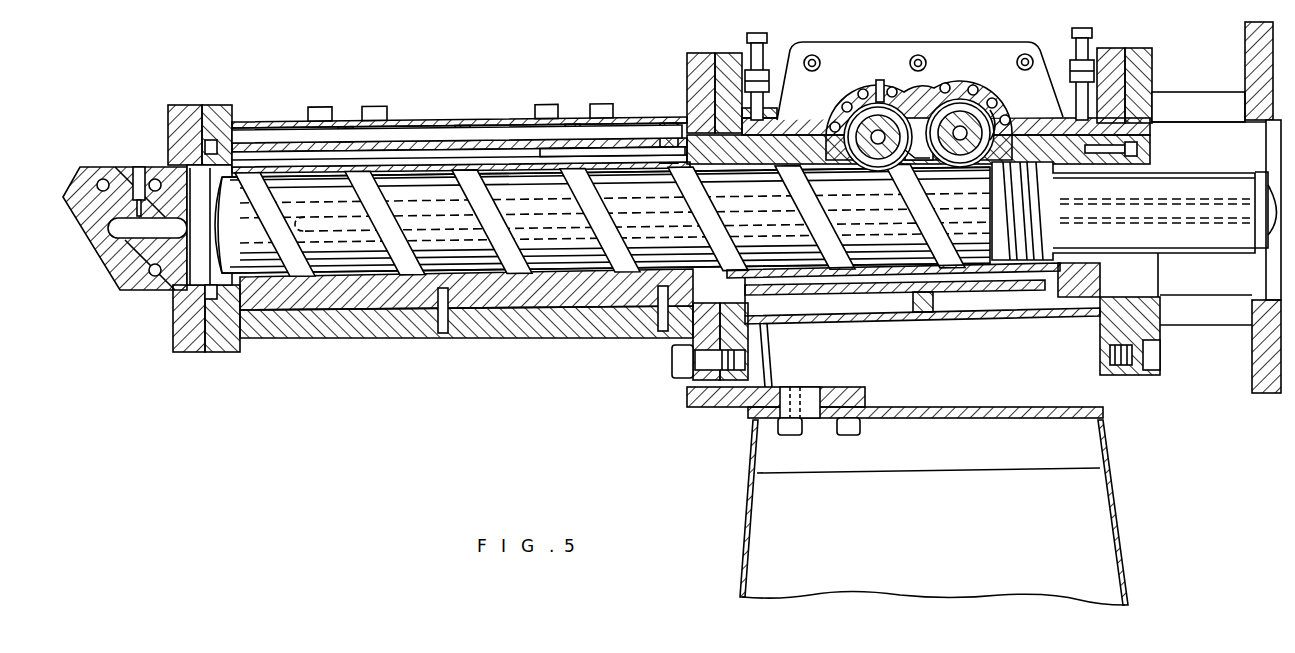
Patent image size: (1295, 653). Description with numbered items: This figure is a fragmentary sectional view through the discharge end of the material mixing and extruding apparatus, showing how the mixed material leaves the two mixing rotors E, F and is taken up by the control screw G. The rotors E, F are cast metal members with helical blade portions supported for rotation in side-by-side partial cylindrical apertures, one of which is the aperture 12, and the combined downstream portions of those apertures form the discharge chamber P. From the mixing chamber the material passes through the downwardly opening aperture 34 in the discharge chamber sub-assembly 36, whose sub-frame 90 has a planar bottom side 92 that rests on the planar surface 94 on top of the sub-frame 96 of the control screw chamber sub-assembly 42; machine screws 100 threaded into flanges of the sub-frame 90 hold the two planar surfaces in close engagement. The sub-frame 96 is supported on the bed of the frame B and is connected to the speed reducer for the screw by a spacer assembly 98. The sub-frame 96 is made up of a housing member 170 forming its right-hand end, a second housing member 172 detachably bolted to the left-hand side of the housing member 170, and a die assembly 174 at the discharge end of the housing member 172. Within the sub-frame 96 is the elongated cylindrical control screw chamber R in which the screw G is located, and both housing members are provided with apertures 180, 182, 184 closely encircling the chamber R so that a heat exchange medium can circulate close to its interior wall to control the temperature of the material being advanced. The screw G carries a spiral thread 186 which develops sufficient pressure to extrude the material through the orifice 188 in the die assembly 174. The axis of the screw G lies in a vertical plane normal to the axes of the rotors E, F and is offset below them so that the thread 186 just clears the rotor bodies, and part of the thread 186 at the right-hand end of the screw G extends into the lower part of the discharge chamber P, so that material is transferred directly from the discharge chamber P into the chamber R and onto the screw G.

The partial cylindrical aperture 12 is at (1040, 152).
The downwardly opening aperture 34 is at (925, 164).
The discharge chamber sub-assembly 36 is at (875, 40).
The control screw chamber sub-assembly 42 is at (420, 112).
The sub-frame 90 is at (998, 40).
The planar bottom side 92 is at (918, 108).
The planar surface 94 is at (806, 137).
The sub-frame 96 is at (648, 336).
The spacer assembly 98 is at (1152, 74).
The machine screws 100 is at (752, 33).
The housing member 170 is at (748, 338).
The housing member 172 is at (336, 340).
The die assembly 174 is at (173, 322).
The aperture 180 is at (979, 280).
The aperture 182 is at (640, 155).
The aperture 184 is at (273, 160).
The spiral thread 186 is at (470, 197).
The orifice 188 is at (100, 240).
The frame B is at (752, 470).
The rotor E is at (876, 170).
The rotor F is at (962, 168).
The material conveying screw G is at (466, 268).
The discharge chamber P is at (1000, 100).
The control screw chamber R is at (562, 268).